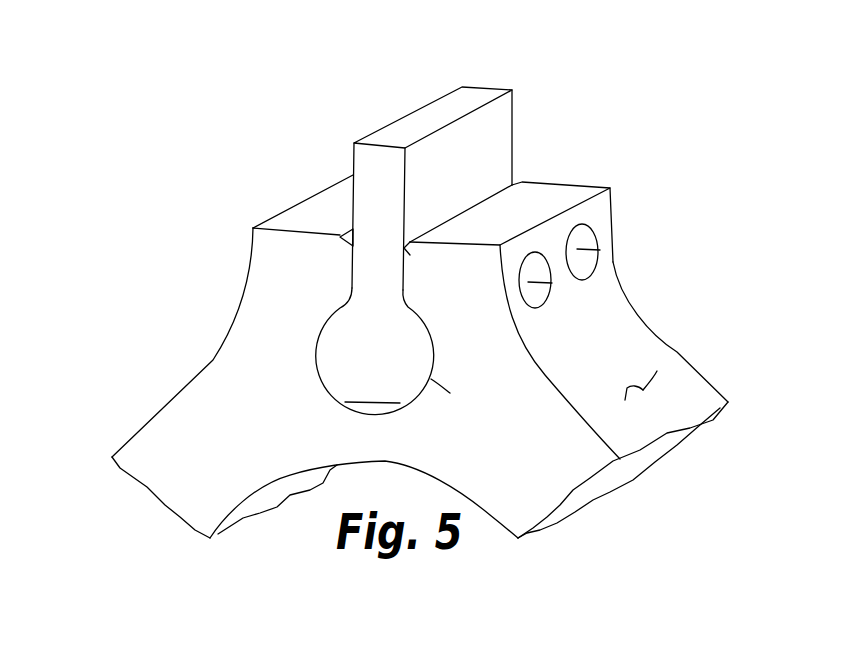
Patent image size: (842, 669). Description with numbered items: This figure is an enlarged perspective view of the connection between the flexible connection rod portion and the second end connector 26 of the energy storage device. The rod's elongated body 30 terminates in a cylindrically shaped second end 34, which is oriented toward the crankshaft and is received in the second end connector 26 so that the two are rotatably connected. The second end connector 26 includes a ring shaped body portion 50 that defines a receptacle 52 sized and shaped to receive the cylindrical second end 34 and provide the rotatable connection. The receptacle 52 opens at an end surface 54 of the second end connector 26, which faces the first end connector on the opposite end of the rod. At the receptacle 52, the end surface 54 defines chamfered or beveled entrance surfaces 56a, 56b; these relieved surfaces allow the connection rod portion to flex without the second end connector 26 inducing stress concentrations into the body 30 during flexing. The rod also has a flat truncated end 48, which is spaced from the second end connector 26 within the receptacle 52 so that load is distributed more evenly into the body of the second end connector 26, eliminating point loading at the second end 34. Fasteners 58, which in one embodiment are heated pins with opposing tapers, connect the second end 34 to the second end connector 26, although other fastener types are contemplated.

The second end connector 26 is at (202, 455).
The elongated body 30 is at (492, 88).
The second end 34 is at (333, 350).
The flat truncated end 48 is at (362, 409).
The ring shaped body portion 50 is at (643, 390).
The receptacle 52 is at (450, 393).
The end surface 54 is at (317, 213).
The chamfered entrance surface 56a is at (342, 238).
The chamfered entrance surface 56b is at (410, 245).
The fasteners 58 is at (552, 280).